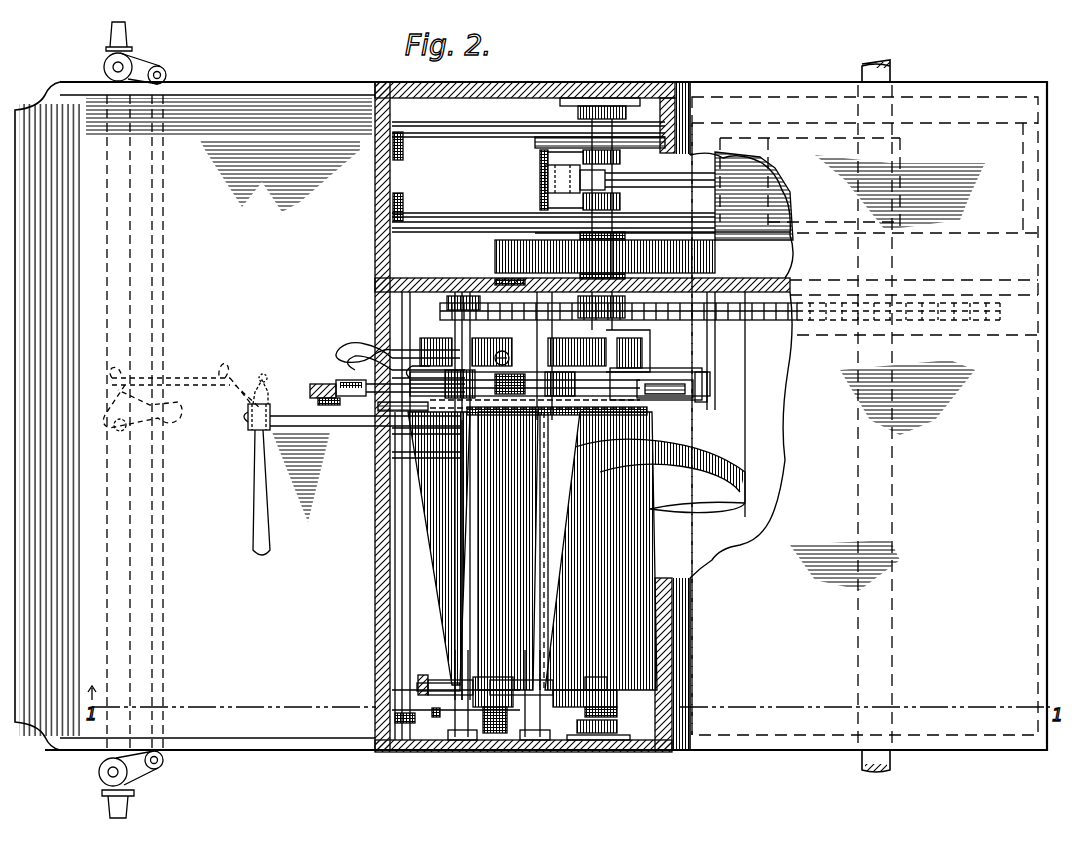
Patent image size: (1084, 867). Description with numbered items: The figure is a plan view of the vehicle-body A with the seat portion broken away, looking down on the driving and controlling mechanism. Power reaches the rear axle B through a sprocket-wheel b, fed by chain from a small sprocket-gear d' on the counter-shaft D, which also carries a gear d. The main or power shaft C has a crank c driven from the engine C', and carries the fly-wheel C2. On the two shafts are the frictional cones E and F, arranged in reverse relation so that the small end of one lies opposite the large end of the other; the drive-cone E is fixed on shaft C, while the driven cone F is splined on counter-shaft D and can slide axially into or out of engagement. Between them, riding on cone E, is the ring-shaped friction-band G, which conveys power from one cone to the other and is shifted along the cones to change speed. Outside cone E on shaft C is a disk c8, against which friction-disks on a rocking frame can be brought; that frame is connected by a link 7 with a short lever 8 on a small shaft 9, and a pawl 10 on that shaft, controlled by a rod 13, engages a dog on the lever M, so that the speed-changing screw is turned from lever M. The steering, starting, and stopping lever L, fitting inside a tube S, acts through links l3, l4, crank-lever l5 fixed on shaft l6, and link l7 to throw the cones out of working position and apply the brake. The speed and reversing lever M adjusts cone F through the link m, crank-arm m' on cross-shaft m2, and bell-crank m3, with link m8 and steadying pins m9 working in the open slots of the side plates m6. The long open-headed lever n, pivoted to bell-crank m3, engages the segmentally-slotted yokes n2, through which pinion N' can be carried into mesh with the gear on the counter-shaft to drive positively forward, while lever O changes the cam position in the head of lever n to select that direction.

The vehicle-body A is at (293, 90).
The rear axle B is at (860, 74).
The main or power shaft C is at (597, 185).
The crank c is at (544, 160).
The engine C' is at (703, 196).
The fly-wheel C2 is at (718, 257).
The friction-disk on main shaft c8 is at (596, 758).
The counter-shaft D is at (503, 280).
The gear d is at (450, 331).
The small sprocket-gear d' is at (477, 269).
The drive-cone E is at (663, 534).
The driven cone F is at (441, 596).
The friction-band G is at (745, 490).
The pinion N' is at (642, 351).
The open-headed lever n is at (695, 400).
The segmentally-slotted yokes n2 is at (695, 398).
The sprocket-wheel b is at (748, 333).
The link m is at (482, 730).
The crank-arm m' is at (521, 717).
The cross-shaft m2 is at (543, 742).
The bell-crank m3 is at (636, 408).
The side plates m6 is at (378, 407).
The link m8 is at (355, 372).
The pins m9 is at (392, 352).
The speed and reversing lever M is at (336, 385).
The lever O is at (352, 355).
The steering, starting, and stopping lever L is at (252, 428).
The tube S is at (252, 412).
The link l3 is at (365, 434).
The link l4 is at (400, 430).
The crank-lever l5 is at (447, 680).
The shaft l6 is at (460, 630).
The link l7 is at (417, 688).
The link 7 is at (435, 721).
The short lever 8 is at (395, 720).
The small shaft or stem 9 is at (404, 570).
The pawl 10 is at (310, 392).
The rod 13 is at (318, 402).